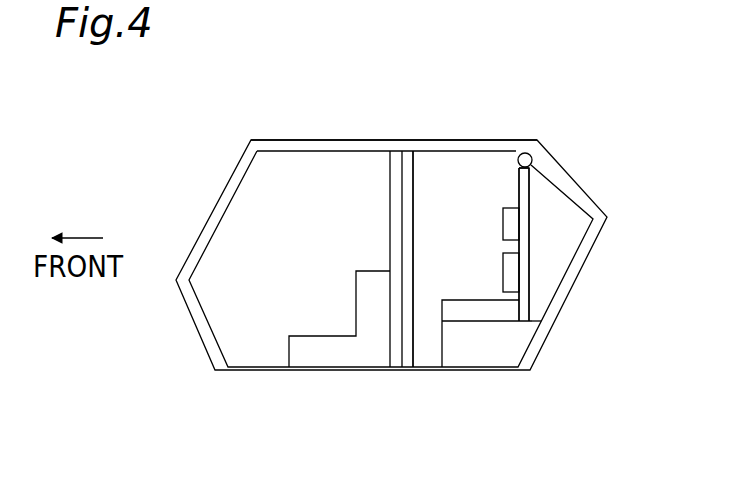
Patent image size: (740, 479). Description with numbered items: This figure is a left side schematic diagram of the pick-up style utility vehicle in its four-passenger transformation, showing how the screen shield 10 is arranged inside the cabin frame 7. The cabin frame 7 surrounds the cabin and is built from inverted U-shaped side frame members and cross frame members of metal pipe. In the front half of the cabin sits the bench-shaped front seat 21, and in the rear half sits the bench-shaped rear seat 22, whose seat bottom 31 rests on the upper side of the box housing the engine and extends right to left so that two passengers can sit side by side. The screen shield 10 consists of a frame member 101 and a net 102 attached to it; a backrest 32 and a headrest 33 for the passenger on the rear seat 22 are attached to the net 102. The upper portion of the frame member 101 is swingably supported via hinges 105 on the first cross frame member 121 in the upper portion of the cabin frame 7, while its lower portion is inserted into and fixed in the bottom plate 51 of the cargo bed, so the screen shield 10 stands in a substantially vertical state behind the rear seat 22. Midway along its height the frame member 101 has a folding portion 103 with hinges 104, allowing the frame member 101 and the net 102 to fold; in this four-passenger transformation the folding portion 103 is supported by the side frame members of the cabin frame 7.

The cabin frame 7 is at (329, 129).
The screen shield 10 is at (530, 130).
The bench-shaped front seat 21 is at (295, 387).
The bench-shaped rear seat 22 is at (460, 344).
The seat bottom 31 is at (482, 313).
The backrest 32 is at (502, 220).
The headrest 33 is at (502, 267).
The bottom plate 51 is at (538, 323).
The frame member 101 is at (527, 215).
The net 102 is at (517, 202).
The folding portion 103 is at (566, 195).
The hinges 104 is at (528, 250).
The hinges 105 is at (533, 162).
The first cross frame member 121 is at (517, 167).